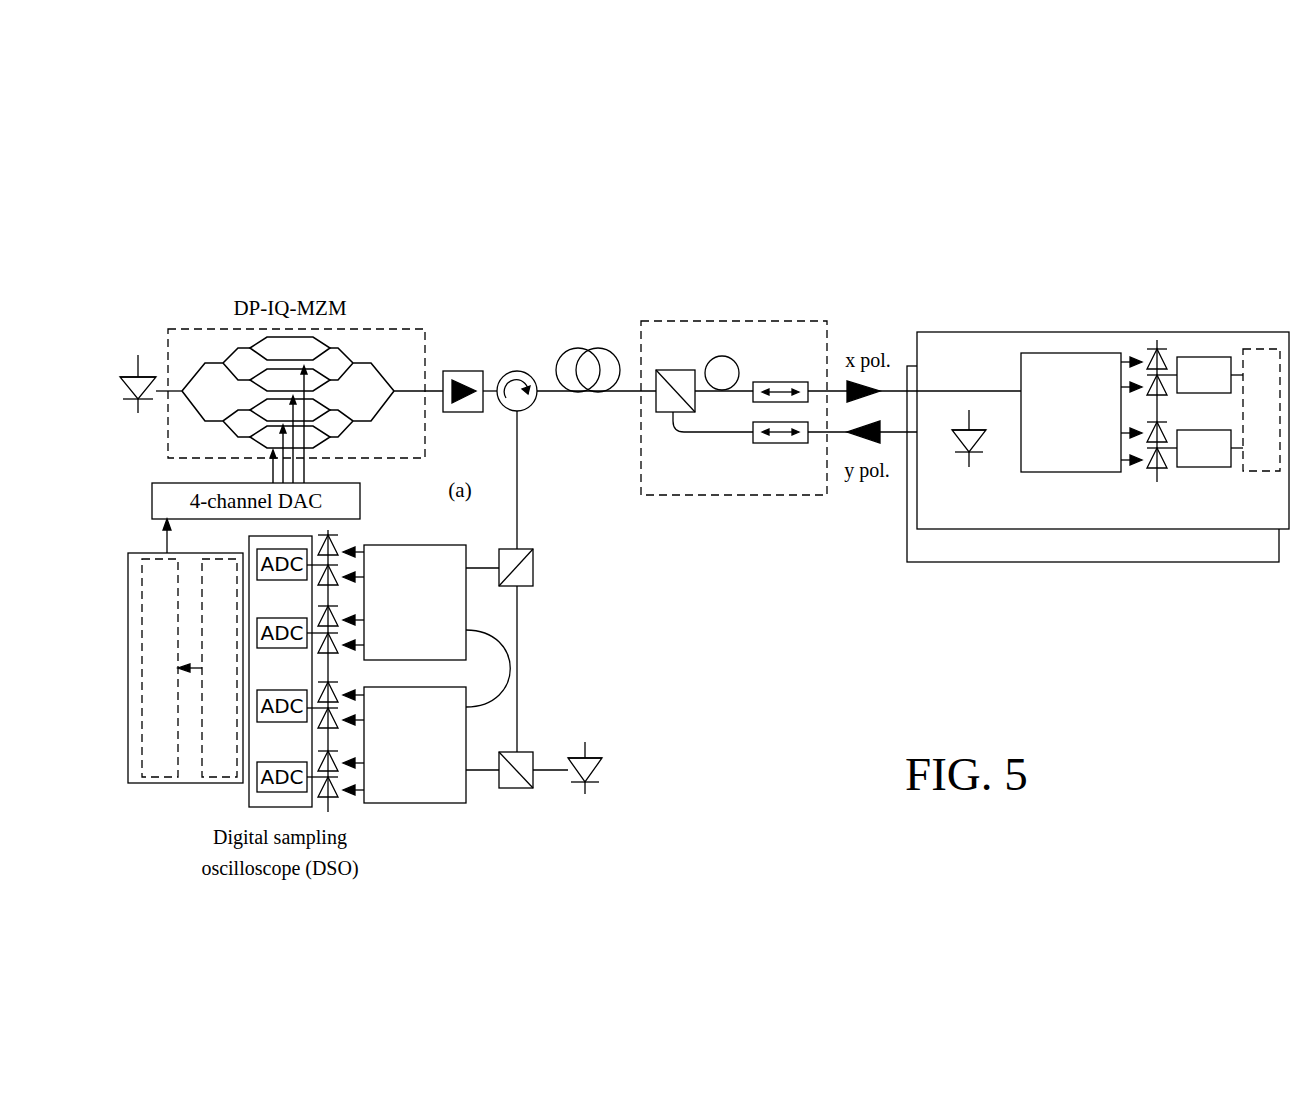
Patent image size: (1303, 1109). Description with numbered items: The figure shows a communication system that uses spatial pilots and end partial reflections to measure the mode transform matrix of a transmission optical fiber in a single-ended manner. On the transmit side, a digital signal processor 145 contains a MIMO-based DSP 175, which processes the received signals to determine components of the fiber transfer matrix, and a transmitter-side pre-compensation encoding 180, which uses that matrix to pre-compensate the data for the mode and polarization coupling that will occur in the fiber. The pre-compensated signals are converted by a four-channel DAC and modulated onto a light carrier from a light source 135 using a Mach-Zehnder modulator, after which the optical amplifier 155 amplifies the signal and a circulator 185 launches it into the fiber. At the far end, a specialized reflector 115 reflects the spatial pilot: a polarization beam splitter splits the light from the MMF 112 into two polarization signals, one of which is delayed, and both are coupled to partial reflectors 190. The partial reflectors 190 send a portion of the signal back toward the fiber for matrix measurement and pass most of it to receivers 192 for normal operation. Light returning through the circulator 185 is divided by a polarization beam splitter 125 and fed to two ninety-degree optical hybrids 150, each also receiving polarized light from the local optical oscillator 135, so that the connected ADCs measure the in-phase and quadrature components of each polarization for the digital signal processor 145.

The local optical oscillator 135 is at (132, 375).
The optical amplifier 155 is at (460, 370).
The MMF 112 is at (554, 360).
The specialized reflector 115 is at (733, 321).
The partial reflector 190 is at (782, 443).
The receiver 192 is at (1073, 332).
The circulator 185 is at (502, 410).
The polarization beam splitter 125 is at (533, 568).
The 90-degree optical hybrid 150 is at (408, 545).
The digital signal processor 145 is at (153, 692).
The transmitter-side pre-compensation encoding 180 is at (142, 772).
The MIMO-based DSP 175 is at (203, 777).